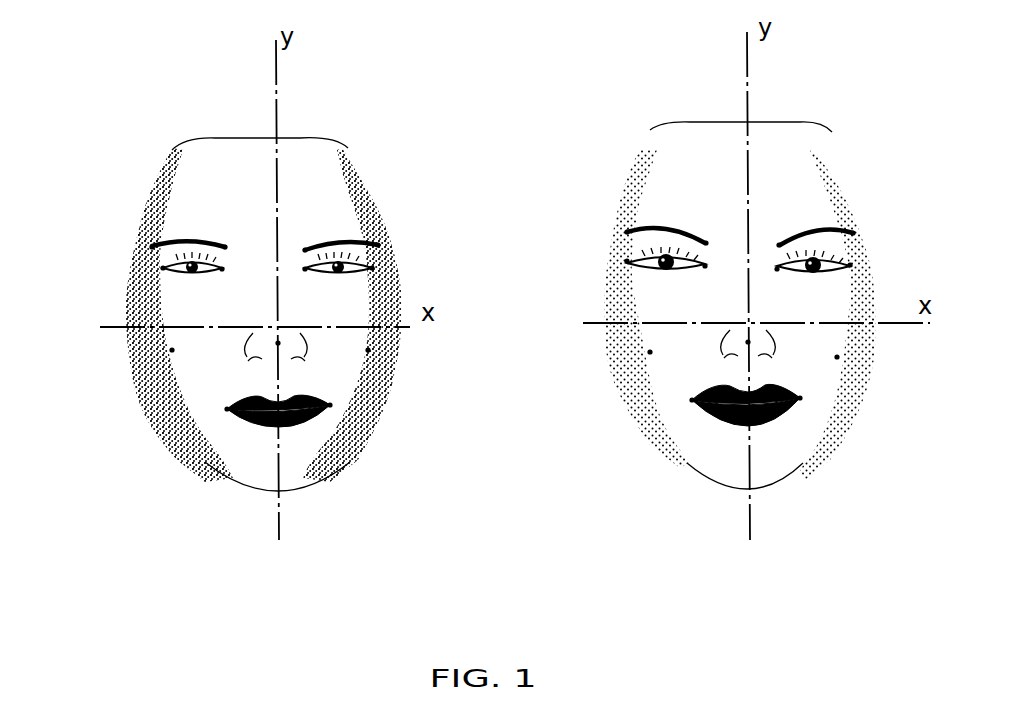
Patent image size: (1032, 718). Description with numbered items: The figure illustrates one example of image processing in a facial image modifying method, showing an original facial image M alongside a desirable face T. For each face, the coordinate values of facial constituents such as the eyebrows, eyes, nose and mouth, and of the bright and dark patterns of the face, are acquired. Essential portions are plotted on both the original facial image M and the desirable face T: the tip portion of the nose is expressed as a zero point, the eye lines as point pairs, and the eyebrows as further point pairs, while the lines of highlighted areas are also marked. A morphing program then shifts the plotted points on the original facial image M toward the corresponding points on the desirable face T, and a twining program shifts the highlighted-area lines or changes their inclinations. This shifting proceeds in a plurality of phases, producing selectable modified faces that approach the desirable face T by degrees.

The original facial image M is at (145, 200).
The desirable face T is at (848, 180).